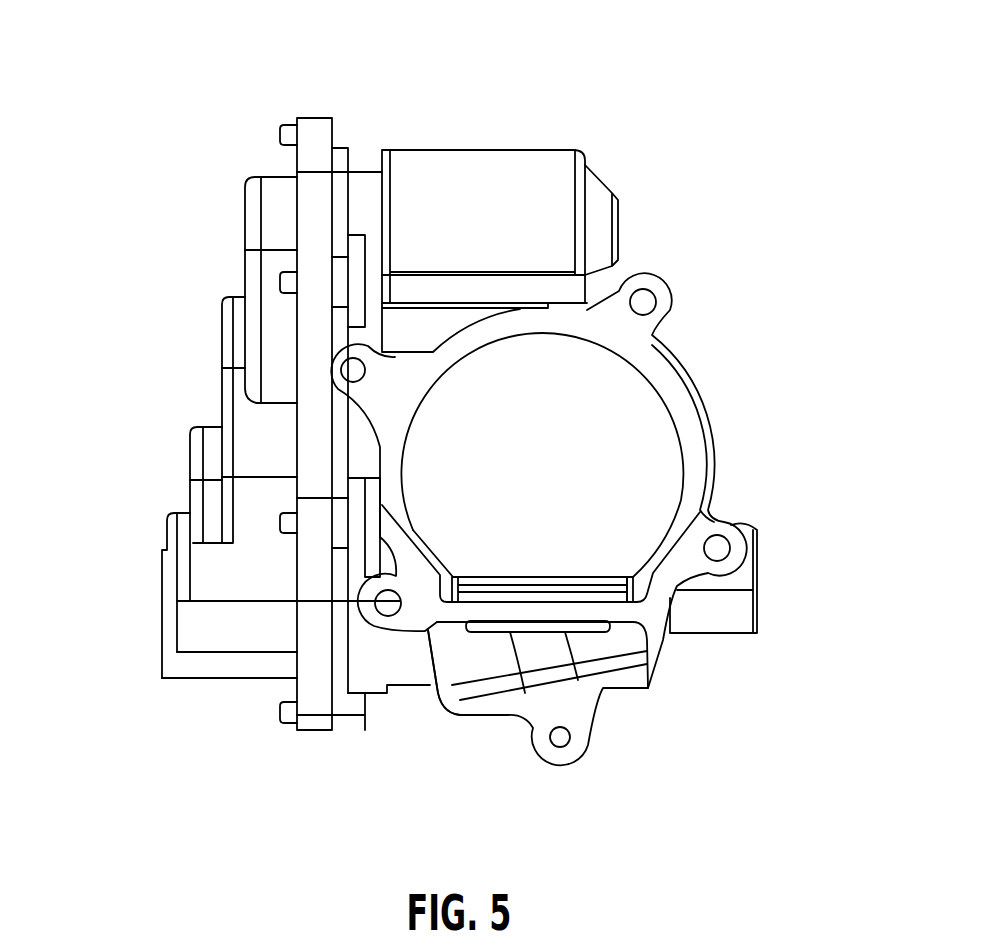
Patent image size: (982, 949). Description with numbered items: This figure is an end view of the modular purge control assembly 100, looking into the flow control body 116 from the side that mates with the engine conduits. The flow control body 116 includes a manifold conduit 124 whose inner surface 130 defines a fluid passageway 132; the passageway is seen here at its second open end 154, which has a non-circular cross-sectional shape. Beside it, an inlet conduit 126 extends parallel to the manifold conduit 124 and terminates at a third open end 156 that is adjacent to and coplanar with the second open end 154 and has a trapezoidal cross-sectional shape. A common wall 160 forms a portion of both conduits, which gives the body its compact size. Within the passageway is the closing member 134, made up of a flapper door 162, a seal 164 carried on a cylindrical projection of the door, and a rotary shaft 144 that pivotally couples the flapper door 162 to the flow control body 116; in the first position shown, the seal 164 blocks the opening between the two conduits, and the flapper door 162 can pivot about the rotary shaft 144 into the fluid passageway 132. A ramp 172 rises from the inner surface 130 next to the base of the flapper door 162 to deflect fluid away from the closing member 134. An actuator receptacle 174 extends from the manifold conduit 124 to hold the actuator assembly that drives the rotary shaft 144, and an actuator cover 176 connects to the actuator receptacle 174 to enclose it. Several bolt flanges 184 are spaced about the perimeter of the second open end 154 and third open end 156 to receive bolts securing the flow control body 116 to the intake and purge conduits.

The modular purge control assembly 100 is at (473, 74).
The flow control body 116 is at (720, 207).
The manifold conduit 124 is at (712, 443).
The inlet conduit 126 is at (640, 683).
The inner surface 130 is at (680, 492).
The fluid passageway 132 is at (520, 417).
The closing member 134 is at (502, 568).
The rotary shaft 144 is at (647, 577).
The second open end 154 is at (697, 389).
The third open end 156 is at (437, 717).
The common wall 160 is at (453, 620).
The flapper door 162 is at (562, 583).
The seal 164 is at (538, 632).
The ramp 172 is at (520, 580).
The actuator receptacle 174 is at (530, 157).
The actuator cover 176 is at (163, 590).
The bolt flanges 184 is at (330, 370).